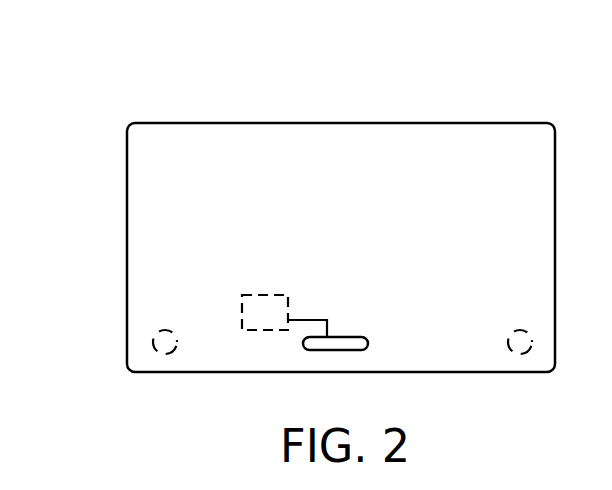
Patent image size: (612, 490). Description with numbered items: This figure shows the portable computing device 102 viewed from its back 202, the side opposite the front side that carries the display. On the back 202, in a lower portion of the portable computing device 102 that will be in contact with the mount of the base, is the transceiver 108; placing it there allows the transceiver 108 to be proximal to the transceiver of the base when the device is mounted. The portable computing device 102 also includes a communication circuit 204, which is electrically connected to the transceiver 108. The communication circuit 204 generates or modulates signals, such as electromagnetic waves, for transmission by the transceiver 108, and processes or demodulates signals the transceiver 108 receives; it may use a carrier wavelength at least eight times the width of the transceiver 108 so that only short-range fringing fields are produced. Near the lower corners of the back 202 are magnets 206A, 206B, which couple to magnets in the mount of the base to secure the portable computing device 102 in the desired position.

The portable computing device 102 is at (168, 82).
The back 202 is at (353, 208).
The communication circuit 204 is at (256, 293).
The transceiver 108 is at (340, 337).
The magnet 206A is at (172, 330).
The magnet 206B is at (516, 330).